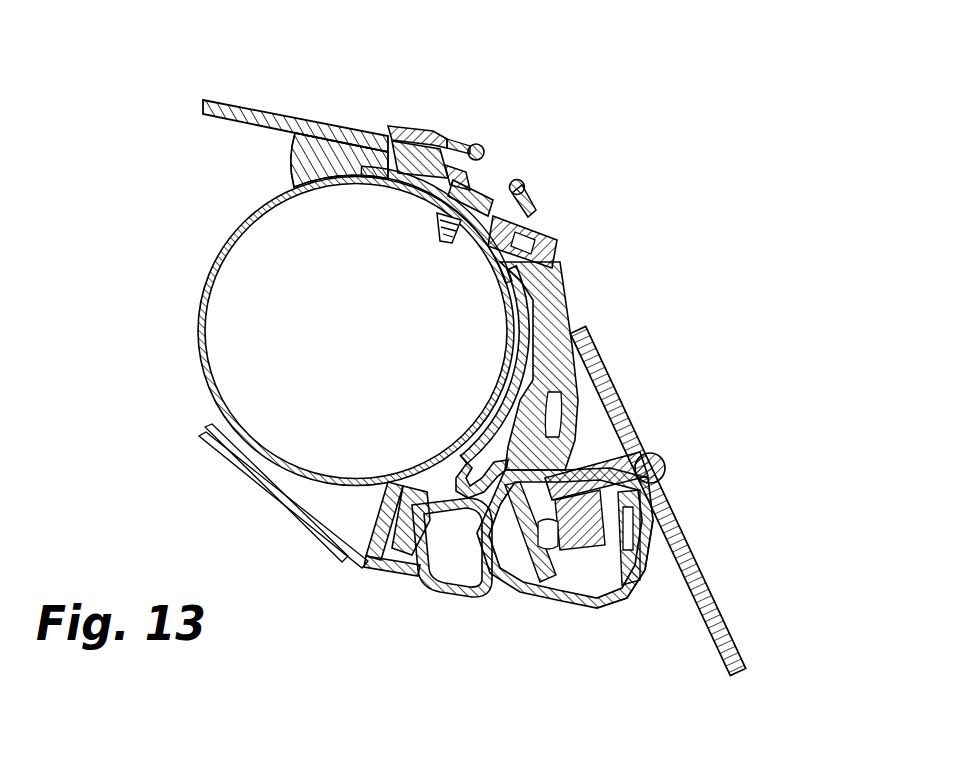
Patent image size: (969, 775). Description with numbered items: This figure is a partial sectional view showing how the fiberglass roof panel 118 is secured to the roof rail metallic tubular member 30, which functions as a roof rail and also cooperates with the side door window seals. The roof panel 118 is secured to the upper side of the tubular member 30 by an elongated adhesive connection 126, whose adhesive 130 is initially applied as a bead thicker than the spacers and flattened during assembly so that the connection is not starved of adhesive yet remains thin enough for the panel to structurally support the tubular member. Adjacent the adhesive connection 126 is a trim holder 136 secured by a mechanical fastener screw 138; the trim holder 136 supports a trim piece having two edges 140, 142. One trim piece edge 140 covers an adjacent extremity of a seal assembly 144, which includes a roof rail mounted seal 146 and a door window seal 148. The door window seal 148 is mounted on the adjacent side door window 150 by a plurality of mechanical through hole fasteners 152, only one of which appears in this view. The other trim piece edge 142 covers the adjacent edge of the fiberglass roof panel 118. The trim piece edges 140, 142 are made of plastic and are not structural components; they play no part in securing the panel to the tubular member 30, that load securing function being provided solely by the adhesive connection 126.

The roof rail metallic tubular member 30 is at (197, 331).
The fiberglass roof panel 118 is at (251, 108).
The adhesive connection 126 is at (291, 148).
The adhesive 130 is at (298, 163).
The trim holder 136 is at (452, 177).
The mechanical fastener screw 138 is at (488, 192).
The trim piece edge 140 is at (557, 243).
The trim piece edge 142 is at (418, 126).
The seal assembly 144 is at (528, 612).
The roof rail mounted seal 146 is at (452, 597).
The door window seal 148 is at (636, 610).
The side door window 150 is at (729, 625).
The mechanical through hole fastener 152 is at (666, 463).